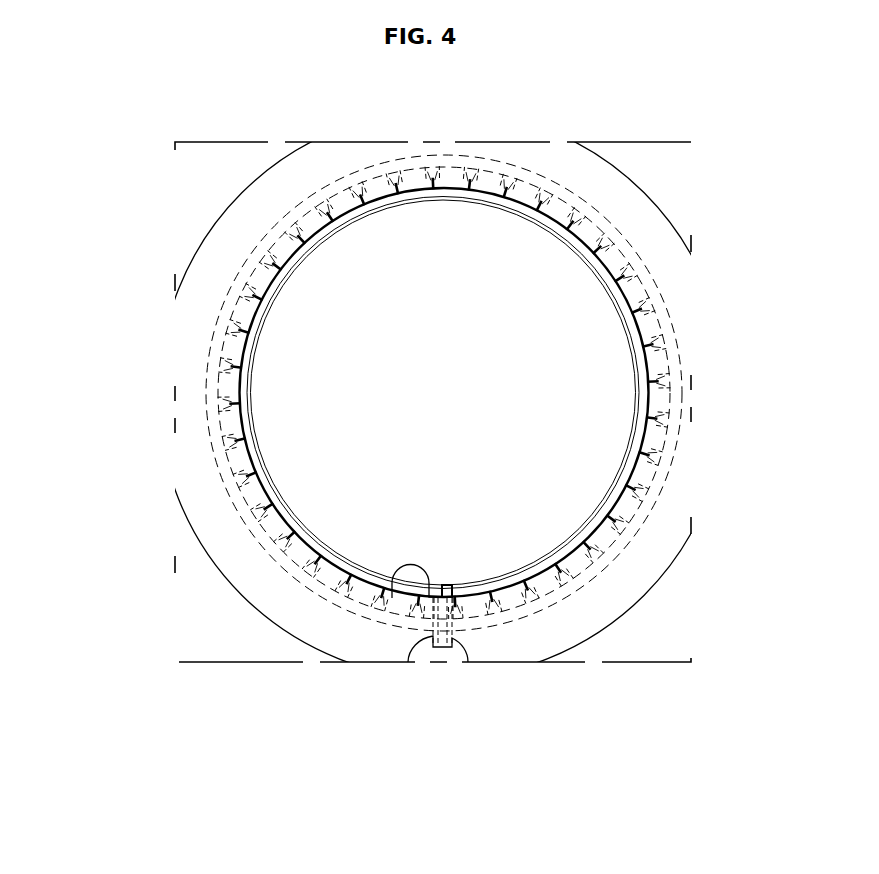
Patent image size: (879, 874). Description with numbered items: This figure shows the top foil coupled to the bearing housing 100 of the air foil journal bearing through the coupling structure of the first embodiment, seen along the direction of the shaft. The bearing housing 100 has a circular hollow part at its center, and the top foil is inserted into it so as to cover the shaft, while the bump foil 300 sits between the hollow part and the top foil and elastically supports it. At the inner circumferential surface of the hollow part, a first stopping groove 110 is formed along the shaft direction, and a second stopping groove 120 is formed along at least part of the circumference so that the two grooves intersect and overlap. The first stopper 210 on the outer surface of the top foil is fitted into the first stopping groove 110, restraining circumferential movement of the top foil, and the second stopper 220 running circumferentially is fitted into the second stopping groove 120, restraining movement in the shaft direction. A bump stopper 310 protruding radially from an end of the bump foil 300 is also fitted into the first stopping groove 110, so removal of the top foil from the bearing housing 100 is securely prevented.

The bearing housing 100 is at (707, 434).
The first stopping groove 110 is at (468, 661).
The second stopping groove 120 is at (323, 587).
The first stopper 210 is at (452, 622).
The second stopper 220 is at (250, 457).
The bump foil 300 is at (393, 598).
The bump stopper 310 is at (408, 662).